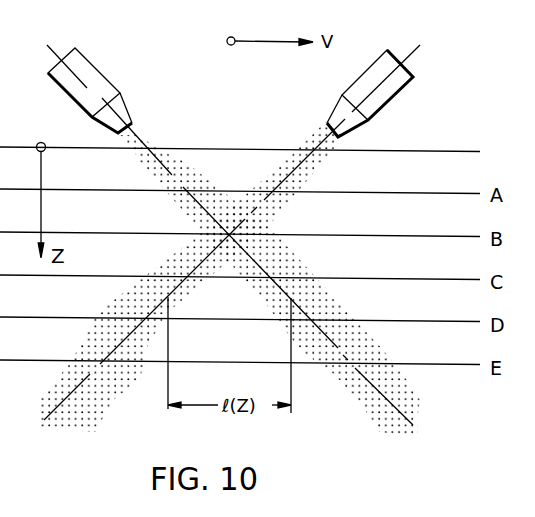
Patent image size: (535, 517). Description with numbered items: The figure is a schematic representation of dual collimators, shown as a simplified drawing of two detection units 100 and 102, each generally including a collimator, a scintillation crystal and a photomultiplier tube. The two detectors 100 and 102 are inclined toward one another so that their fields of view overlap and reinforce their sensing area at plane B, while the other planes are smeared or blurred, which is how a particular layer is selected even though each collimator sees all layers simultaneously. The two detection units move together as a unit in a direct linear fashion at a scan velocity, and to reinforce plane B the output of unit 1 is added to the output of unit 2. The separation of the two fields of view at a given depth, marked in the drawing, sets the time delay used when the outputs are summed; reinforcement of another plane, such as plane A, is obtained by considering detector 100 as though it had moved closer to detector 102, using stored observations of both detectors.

The unit 1 is at (100, 89).
The unit 2 is at (395, 91).
The detection unit 100 is at (98, 83).
The detection unit 102 is at (383, 103).